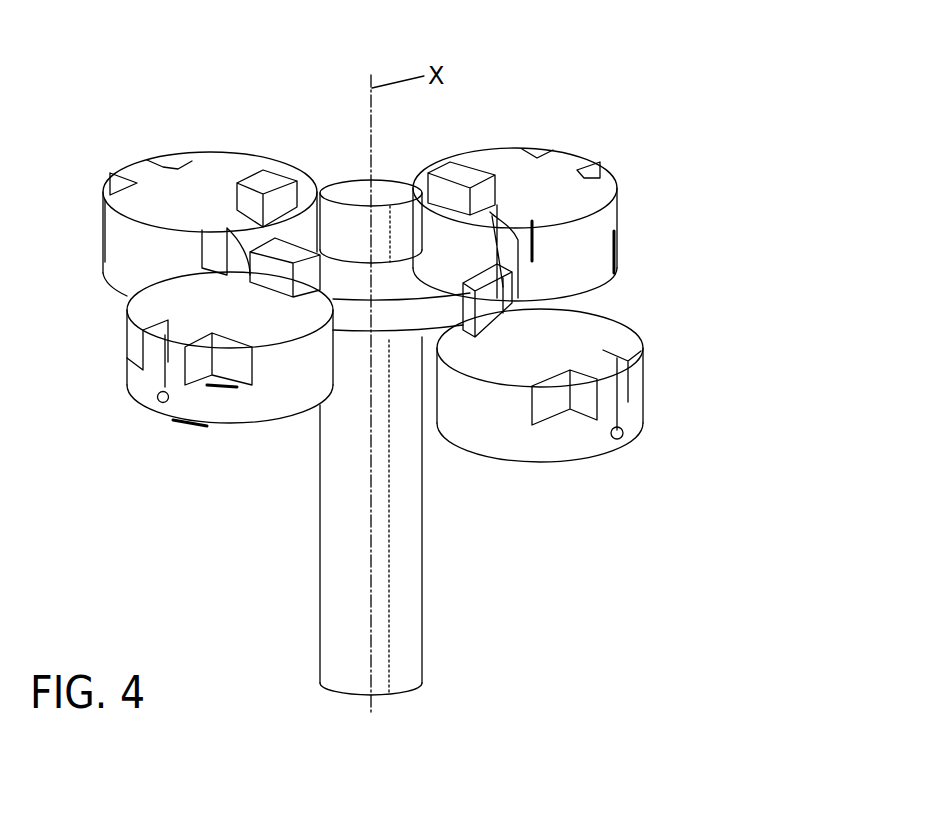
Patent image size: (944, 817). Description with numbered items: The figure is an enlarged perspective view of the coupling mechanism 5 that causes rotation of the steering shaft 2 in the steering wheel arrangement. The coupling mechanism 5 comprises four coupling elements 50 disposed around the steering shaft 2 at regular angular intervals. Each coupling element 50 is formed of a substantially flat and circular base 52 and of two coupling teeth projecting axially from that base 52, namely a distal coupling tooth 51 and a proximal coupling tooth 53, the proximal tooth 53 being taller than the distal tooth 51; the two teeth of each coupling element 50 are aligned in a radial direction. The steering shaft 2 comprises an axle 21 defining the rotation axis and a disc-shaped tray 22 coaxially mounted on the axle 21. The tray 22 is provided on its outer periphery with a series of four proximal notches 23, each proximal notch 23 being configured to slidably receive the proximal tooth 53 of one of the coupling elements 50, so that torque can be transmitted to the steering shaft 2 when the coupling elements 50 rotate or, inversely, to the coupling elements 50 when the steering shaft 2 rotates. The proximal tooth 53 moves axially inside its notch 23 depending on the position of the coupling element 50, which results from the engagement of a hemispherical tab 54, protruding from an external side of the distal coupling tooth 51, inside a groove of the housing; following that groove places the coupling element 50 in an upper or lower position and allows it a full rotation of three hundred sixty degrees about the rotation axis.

The steering shaft 2 is at (422, 595).
The axle 21 is at (338, 559).
The disc-shaped tray 22 is at (360, 315).
The proximal notch 23 is at (460, 262).
The coupling mechanism 5 is at (672, 186).
The coupling element 50 is at (231, 152).
The distal coupling tooth 51 is at (142, 170).
The base 52 is at (120, 261).
The proximal coupling tooth 53 is at (275, 173).
The hemispherical tab 54 is at (628, 432).